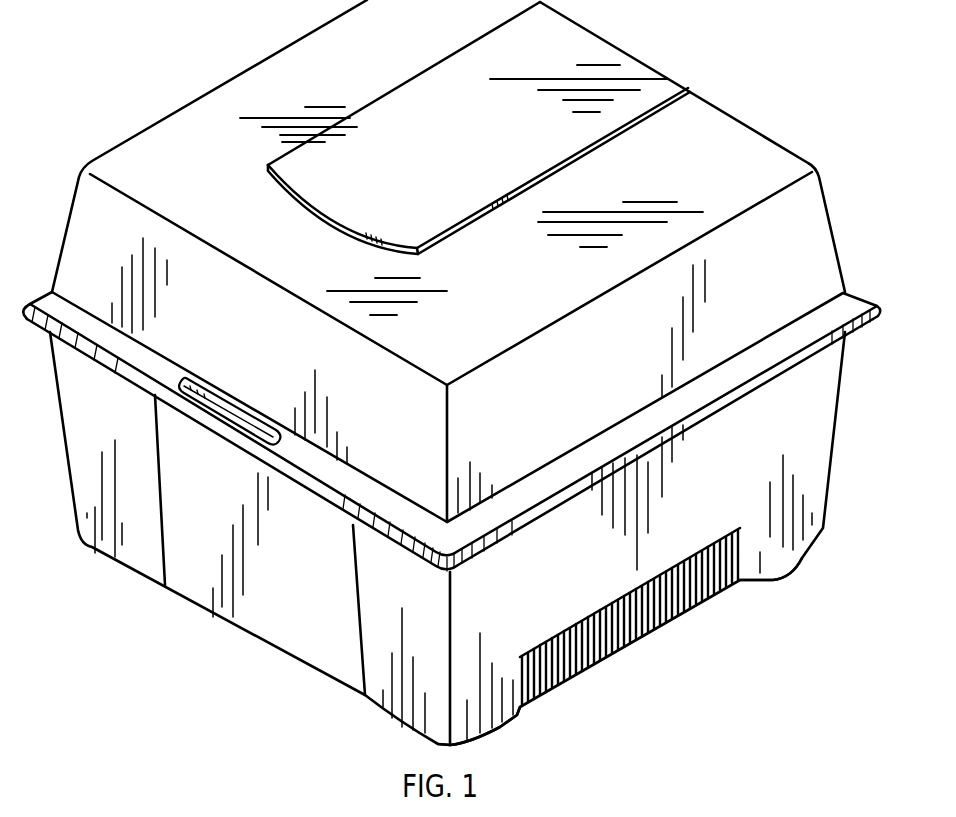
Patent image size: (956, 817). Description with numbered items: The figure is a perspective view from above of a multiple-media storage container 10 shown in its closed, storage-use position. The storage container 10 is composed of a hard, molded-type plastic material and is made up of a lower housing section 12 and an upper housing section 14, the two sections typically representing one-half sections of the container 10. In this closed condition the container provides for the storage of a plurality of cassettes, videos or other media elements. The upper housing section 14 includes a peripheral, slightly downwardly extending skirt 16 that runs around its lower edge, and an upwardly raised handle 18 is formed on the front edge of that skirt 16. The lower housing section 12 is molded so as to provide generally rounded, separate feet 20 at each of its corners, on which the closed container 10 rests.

The multiple-media storage container 10 is at (146, 67).
The lower housing section 12 is at (543, 587).
The upper housing section 14 is at (577, 387).
The skirt 16 is at (849, 279).
The handle 18 is at (226, 394).
The feet 20 is at (516, 713).